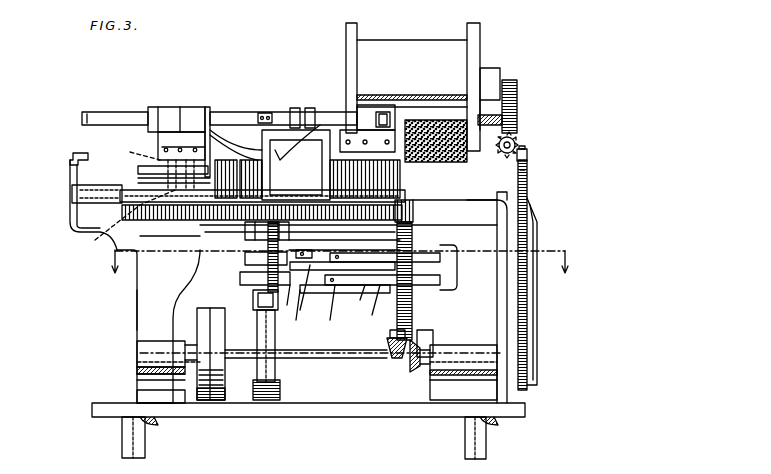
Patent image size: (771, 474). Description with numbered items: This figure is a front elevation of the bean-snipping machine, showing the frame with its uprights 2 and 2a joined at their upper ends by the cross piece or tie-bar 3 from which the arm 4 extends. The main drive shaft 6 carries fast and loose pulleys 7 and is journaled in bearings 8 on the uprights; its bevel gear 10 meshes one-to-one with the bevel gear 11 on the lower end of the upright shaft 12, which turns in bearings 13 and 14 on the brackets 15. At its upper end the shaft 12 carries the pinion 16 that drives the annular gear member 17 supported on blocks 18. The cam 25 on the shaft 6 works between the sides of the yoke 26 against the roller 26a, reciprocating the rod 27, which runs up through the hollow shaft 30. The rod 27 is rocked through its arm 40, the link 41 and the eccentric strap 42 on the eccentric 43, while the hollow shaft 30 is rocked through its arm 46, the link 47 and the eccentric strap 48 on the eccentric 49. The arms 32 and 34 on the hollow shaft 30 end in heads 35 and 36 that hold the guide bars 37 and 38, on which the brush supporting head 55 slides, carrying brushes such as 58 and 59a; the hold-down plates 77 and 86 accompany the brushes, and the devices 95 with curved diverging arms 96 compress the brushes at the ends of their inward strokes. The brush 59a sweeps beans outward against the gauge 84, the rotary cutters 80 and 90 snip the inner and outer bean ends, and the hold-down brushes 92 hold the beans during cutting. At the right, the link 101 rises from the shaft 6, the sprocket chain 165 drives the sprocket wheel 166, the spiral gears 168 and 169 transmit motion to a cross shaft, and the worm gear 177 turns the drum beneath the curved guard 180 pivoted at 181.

The upright 2 is at (455, 298).
The upright 2a is at (137, 302).
The cross piece or tie-bar 3 is at (245, 238).
The arm 4 is at (344, 245).
The main or drive shaft 6 is at (345, 375).
The fast and loose pulleys 7 is at (205, 326).
The bearing 8 is at (137, 349).
The bevel gear 10 is at (414, 370).
The bevel gear 11 is at (393, 352).
The shaft 12 is at (440, 258).
The bearing 13 is at (435, 328).
The bearing 14 is at (500, 212).
The arm or bracket 15 is at (367, 273).
The pinion 16 is at (415, 217).
The annular gear member 17 is at (185, 222).
The block 18 is at (165, 238).
The cam 25 is at (280, 390).
The yoke or guide 26 is at (253, 300).
The roller 26a is at (262, 340).
The reciprocatory and rocking shaft or rod 27 is at (245, 262).
The hollow shaft member 30 is at (268, 258).
The arm 32 is at (316, 125).
The arm 34 is at (262, 110).
The head 35 is at (310, 108).
The head 36 is at (193, 105).
The guide bar 37 is at (290, 110).
The guide bar 38 is at (110, 110).
The arm 40 is at (440, 282).
The link or connecting rod 41 is at (296, 322).
The eccentric strap 42 is at (332, 312).
The eccentric 43 is at (375, 312).
The arm 46 is at (291, 300).
The link or connecting rod 47 is at (311, 287).
The eccentric strap 48 is at (364, 296).
The eccentric 49 is at (440, 252).
The brush supporting head 55 is at (372, 103).
The brush 58 is at (412, 150).
The brush 59a is at (139, 147).
The hold-down plate 77 is at (307, 165).
The rotary cutter 80 is at (95, 241).
The gauge 84 is at (77, 225).
The hold-down plate 86 is at (138, 170).
The rotary cutter 90 is at (72, 194).
The hold-down brush 92 is at (72, 156).
The device 95 is at (212, 128).
The curved diverging arm 96 is at (234, 147).
The link 101 is at (538, 228).
The sprocket chain 165 is at (530, 193).
The sprocket wheel 166 is at (530, 170).
The spiral gear 168 is at (528, 157).
The spiral gear 169 is at (515, 141).
The worm gear 177 is at (518, 103).
The curved guard 180 is at (405, 42).
The pivot 181 is at (436, 93).